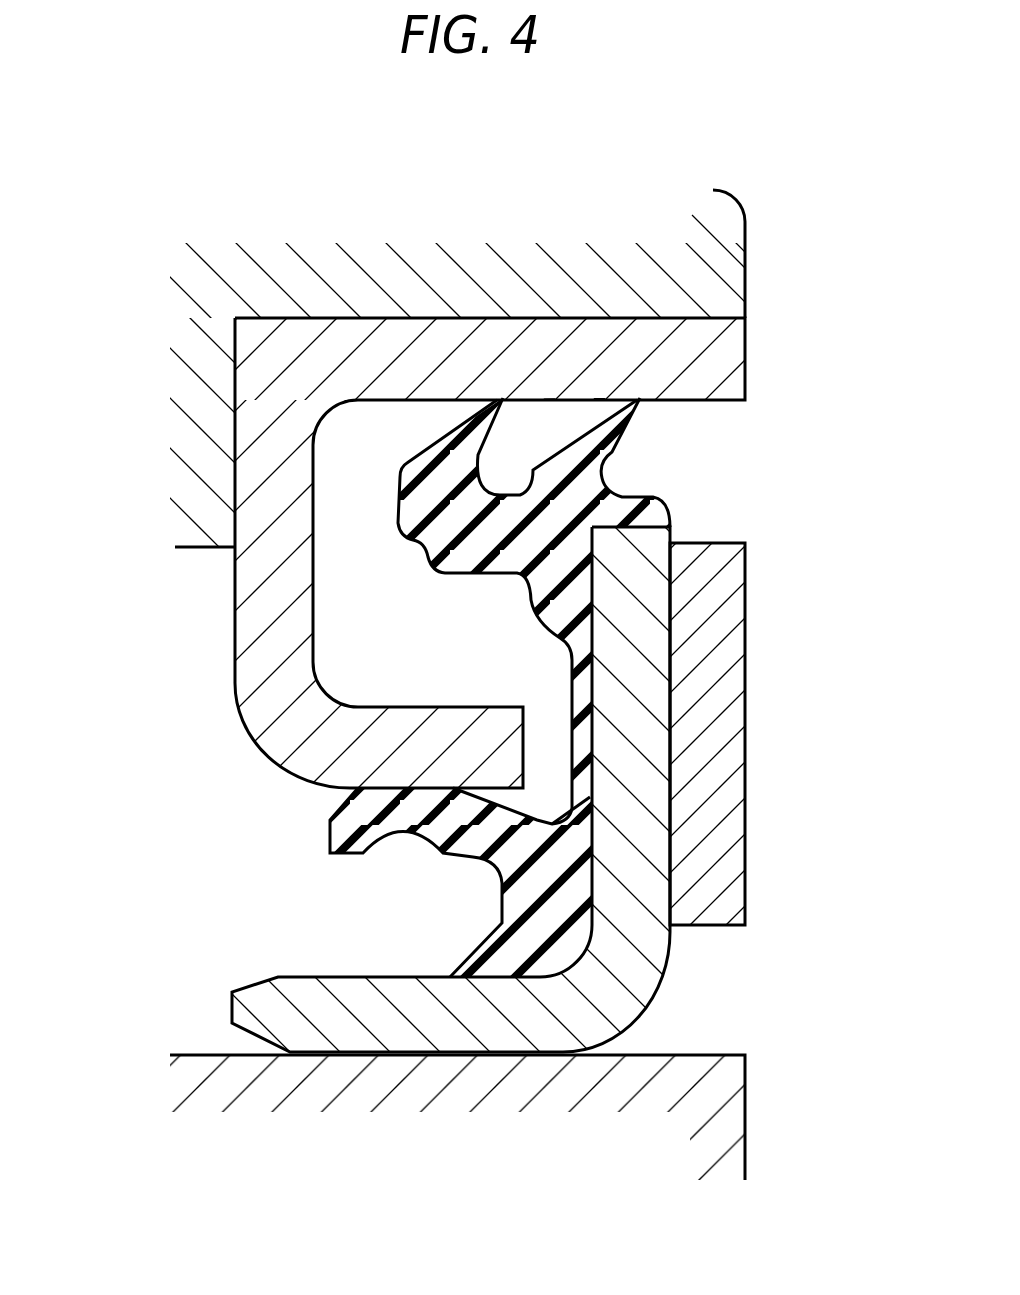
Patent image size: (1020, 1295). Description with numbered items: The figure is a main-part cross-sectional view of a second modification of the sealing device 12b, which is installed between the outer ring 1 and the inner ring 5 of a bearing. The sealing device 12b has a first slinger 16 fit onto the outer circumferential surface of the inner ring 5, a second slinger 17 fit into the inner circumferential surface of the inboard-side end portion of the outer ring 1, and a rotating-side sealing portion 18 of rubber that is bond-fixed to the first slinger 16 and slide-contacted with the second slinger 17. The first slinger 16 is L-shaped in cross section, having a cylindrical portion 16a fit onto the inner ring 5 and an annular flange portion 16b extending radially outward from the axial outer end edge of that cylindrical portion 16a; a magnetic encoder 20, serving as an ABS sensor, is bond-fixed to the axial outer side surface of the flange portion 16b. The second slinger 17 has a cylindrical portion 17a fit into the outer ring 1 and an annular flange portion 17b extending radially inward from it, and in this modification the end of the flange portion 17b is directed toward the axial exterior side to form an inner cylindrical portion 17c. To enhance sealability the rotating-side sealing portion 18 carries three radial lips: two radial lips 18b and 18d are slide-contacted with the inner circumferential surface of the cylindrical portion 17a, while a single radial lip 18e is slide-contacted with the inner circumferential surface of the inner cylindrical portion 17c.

The outer ring 1 is at (718, 282).
The inner ring 5 is at (735, 1110).
The sealing device 12b is at (172, 597).
The first slinger 16 is at (548, 872).
The cylindrical portion 16a is at (440, 1027).
The annular flange portion 16b is at (635, 812).
The second slinger 17 is at (426, 459).
The cylindrical portion 17a is at (497, 343).
The annular flange portion 17b is at (270, 612).
The inner cylindrical portion 17c is at (420, 735).
The rotating-side sealing portion 18 is at (513, 554).
The radial lip 18b is at (628, 430).
The radial lip 18d is at (483, 433).
The radial lip 18e is at (375, 822).
The magnetic encoder 20 is at (720, 738).